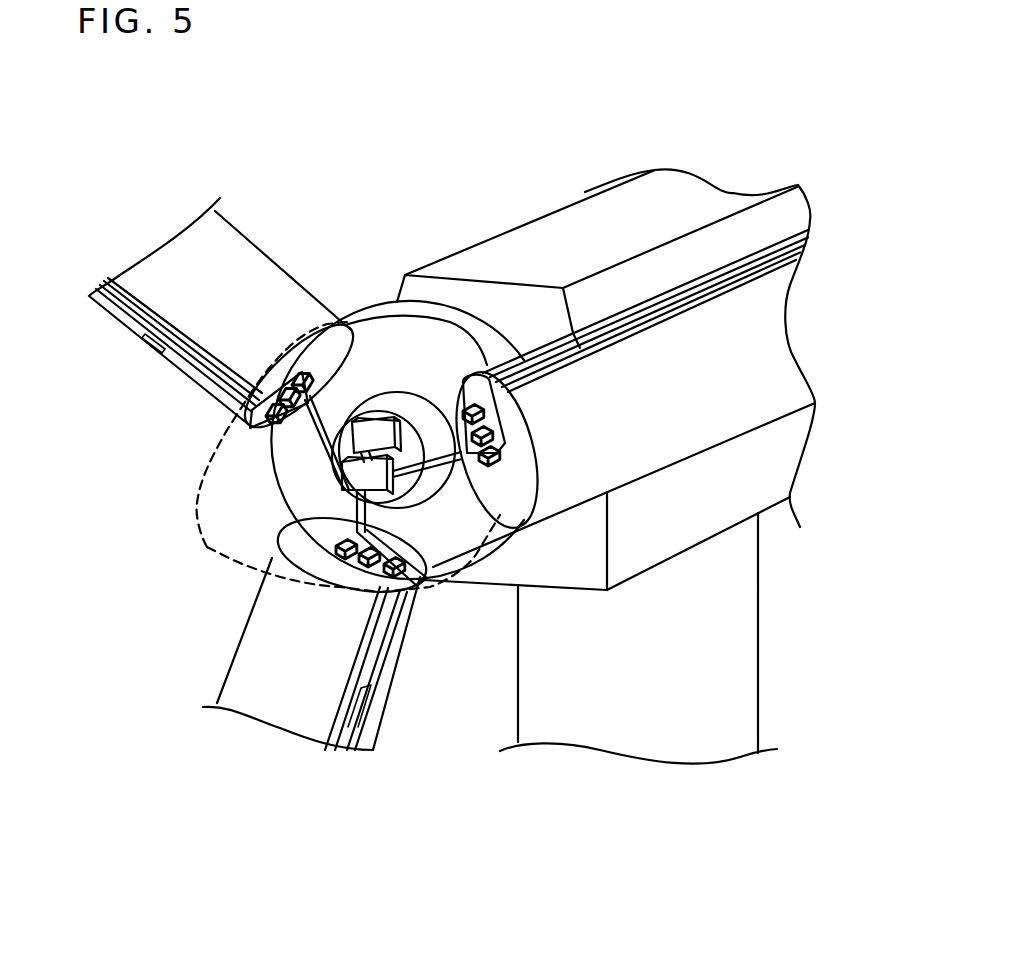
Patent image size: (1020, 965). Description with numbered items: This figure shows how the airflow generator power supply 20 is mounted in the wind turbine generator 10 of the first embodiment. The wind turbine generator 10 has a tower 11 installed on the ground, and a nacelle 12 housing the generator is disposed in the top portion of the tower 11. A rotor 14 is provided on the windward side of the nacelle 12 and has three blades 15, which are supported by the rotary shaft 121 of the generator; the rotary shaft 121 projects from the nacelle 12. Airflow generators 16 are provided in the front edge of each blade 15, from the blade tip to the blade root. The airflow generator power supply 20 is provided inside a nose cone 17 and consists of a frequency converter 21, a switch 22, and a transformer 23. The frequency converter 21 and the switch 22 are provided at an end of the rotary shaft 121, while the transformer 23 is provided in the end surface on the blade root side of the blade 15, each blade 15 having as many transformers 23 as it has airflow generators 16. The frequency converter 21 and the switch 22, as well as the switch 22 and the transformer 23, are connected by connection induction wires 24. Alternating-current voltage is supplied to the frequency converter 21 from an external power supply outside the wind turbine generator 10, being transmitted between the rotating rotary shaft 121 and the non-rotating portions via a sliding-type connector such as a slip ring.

The wind turbine generator 10 is at (686, 124).
The tower 11 is at (743, 668).
The nacelle 12 is at (572, 217).
The rotary shaft 121 is at (403, 400).
The rotor 14 is at (356, 194).
The blade 15 is at (233, 251).
The airflow generator 16 is at (122, 306).
The nose cone 17 is at (207, 567).
The airflow generator power supply 20 is at (291, 515).
The frequency converter 21 is at (367, 438).
The switch 22 is at (363, 481).
The transformer 23 is at (293, 368).
The connection induction wire 24 is at (196, 352).